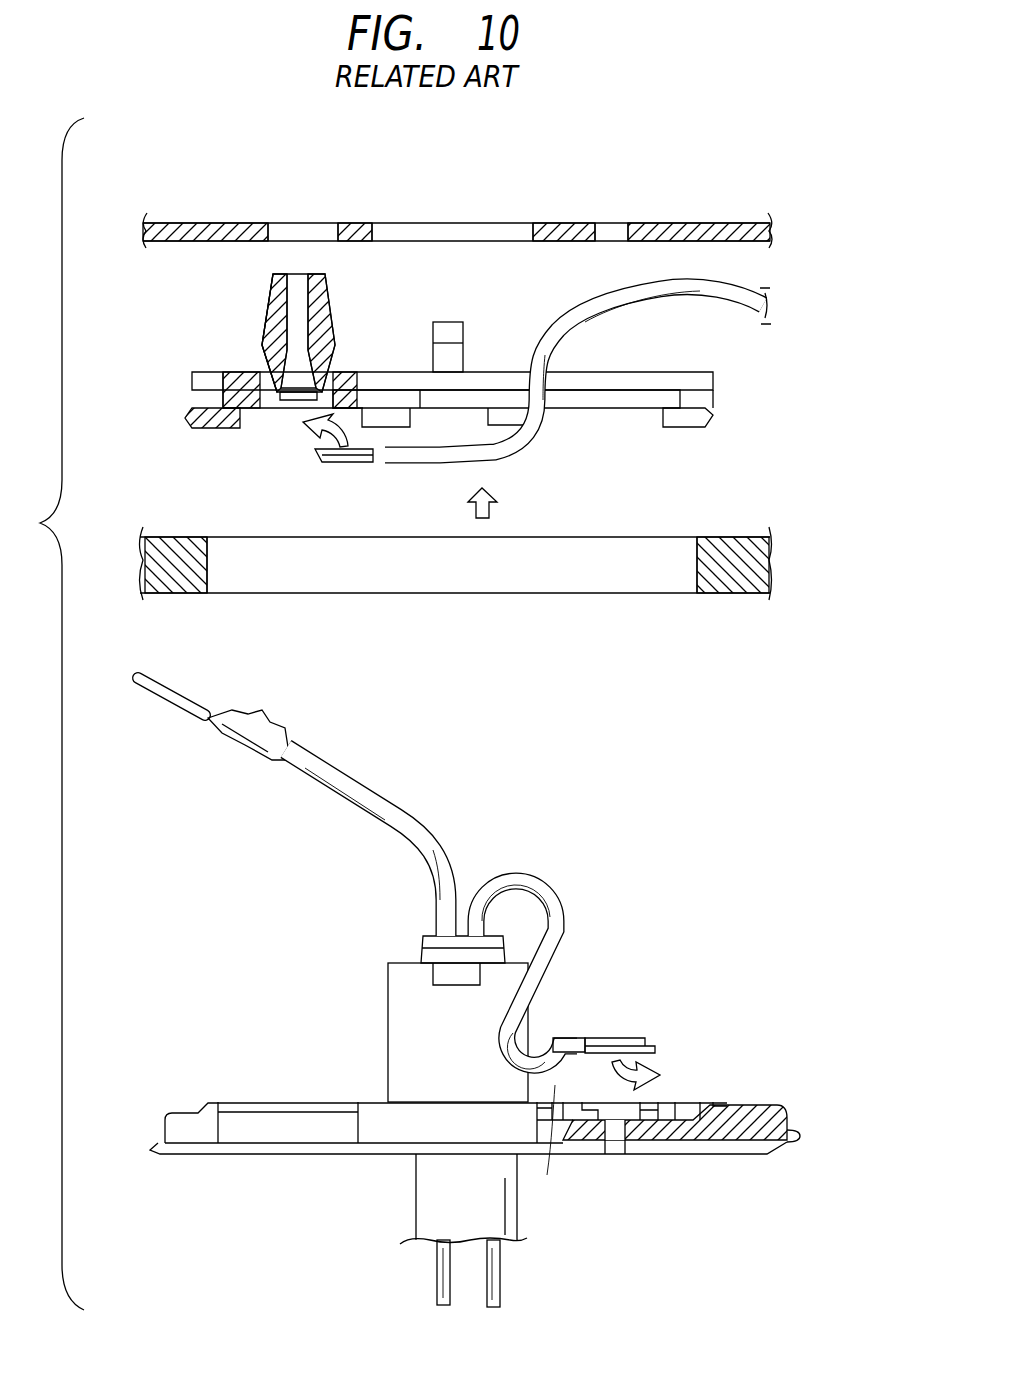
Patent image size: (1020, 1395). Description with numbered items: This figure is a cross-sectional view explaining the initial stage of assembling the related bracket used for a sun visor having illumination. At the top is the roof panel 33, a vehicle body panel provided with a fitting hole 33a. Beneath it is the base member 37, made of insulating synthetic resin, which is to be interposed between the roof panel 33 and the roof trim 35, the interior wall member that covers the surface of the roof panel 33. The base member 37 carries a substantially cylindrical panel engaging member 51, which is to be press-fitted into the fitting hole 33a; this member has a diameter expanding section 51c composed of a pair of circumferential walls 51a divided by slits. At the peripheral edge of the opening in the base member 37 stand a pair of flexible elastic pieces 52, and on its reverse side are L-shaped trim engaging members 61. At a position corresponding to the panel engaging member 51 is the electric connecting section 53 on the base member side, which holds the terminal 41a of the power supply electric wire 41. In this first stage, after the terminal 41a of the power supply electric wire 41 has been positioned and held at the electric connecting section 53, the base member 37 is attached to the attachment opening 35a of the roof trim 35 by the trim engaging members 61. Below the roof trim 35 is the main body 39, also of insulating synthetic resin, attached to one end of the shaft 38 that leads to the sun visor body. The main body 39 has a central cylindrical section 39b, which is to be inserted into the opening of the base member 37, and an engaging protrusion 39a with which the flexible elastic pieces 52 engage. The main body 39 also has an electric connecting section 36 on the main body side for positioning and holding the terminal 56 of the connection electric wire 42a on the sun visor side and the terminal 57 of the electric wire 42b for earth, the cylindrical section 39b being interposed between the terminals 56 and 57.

The roof panel 33 is at (575, 218).
The fitting hole 33a is at (313, 226).
The panel engaging member 51 is at (267, 291).
The circumferential walls 51a is at (328, 298).
The diameter expanding section 51c is at (262, 342).
The flexible elastic pieces 52 is at (447, 325).
The power supply electric wire 41 is at (553, 322).
The terminal 41a is at (358, 463).
The base member 37 is at (570, 415).
The trim engaging member 61 is at (215, 429).
The electric connecting section 53 is at (288, 411).
The roof trim 35 is at (607, 530).
The attachment opening 35a is at (620, 565).
The terminal 56 is at (182, 716).
The connection electric wire 42a is at (369, 798).
The electric wire for earth 42b is at (556, 905).
The engaging protrusion 39a is at (442, 970).
The cylindrical section 39b is at (412, 1045).
The terminal 57 is at (628, 1038).
The electric connecting section 36 is at (664, 1087).
The shaft 38 is at (445, 1190).
The main body 39 is at (685, 1166).